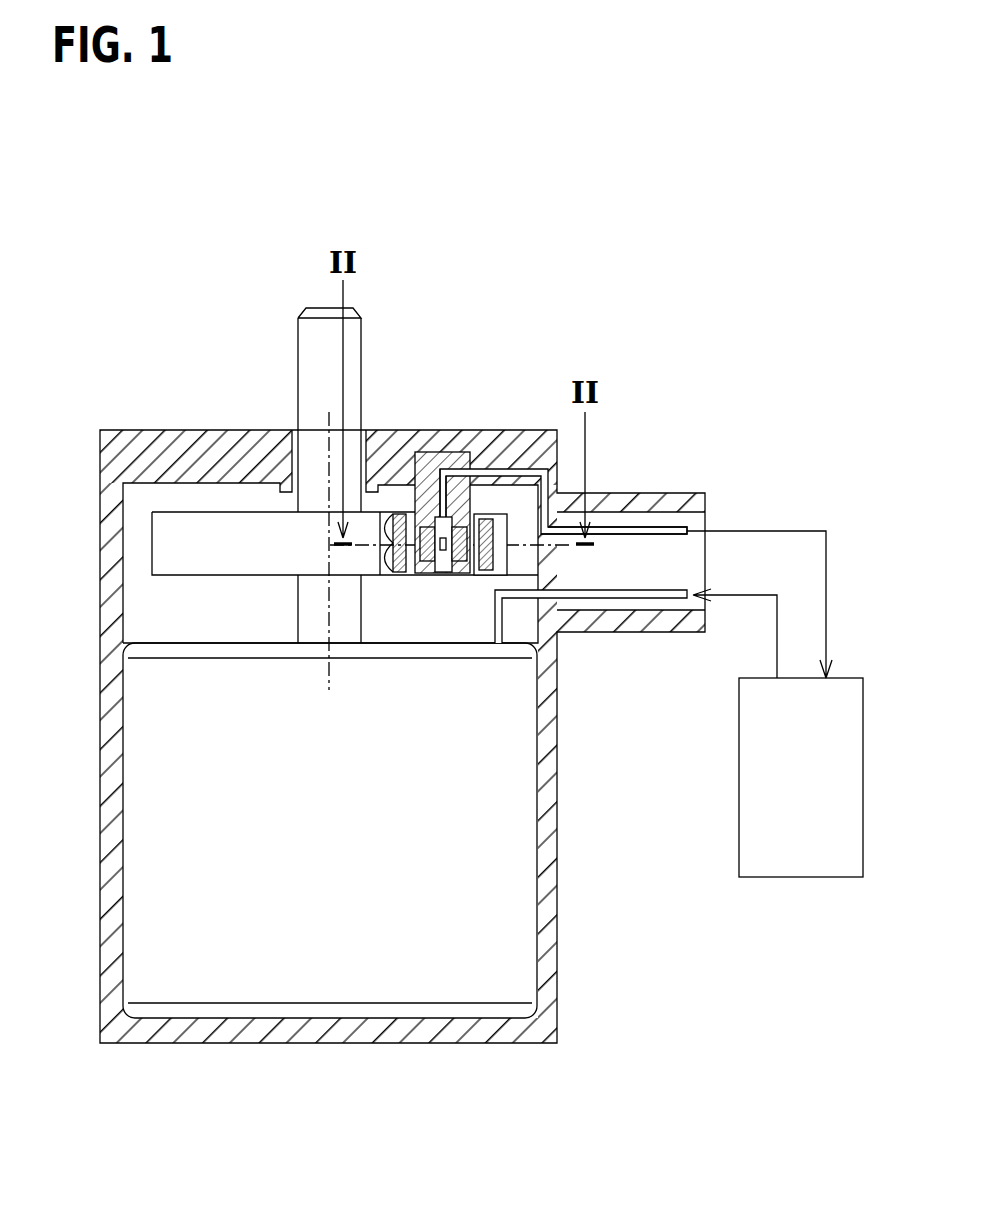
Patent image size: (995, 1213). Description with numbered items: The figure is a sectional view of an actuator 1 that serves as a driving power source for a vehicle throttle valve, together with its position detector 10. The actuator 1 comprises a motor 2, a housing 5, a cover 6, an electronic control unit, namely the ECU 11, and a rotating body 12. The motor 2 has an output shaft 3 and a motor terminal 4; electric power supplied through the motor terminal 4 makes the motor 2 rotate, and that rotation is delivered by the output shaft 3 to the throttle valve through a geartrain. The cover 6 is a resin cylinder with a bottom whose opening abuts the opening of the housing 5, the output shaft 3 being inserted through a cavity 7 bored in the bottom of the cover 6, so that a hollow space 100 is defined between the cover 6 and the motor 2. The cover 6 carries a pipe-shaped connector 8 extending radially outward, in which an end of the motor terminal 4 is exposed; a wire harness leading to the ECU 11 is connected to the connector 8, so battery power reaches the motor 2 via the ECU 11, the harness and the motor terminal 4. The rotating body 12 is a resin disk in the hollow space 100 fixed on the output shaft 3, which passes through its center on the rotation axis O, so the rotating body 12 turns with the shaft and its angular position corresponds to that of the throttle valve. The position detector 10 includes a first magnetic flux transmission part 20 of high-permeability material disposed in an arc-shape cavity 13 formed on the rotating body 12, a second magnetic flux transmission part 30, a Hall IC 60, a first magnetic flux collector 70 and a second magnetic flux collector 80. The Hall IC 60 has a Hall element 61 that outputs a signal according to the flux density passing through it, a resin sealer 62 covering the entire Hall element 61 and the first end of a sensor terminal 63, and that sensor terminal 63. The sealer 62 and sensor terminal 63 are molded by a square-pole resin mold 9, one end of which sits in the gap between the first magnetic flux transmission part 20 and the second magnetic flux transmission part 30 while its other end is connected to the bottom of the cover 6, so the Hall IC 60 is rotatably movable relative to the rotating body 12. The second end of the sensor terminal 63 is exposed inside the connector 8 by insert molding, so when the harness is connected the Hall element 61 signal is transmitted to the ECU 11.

The actuator 1 is at (165, 268).
The motor 2 is at (133, 755).
The output shaft 3 is at (307, 347).
The motor terminal 4 is at (625, 598).
The housing 5 is at (107, 877).
The cover 6 is at (364, 736).
The cavity 7 is at (300, 437).
The connector 8 is at (653, 500).
The mold 9 is at (554, 453).
The position detector 10 is at (524, 467).
The electronic control unit (ECU) 11 is at (748, 805).
The rotating body 12 is at (205, 572).
The arc-shape cavity 13 is at (411, 505).
The first magnetic flux transmission part 20 is at (390, 567).
The second magnetic flux transmission part 30 is at (487, 570).
The Hall IC 60 is at (435, 581).
The Hall element 61 is at (443, 551).
The sealer 62 is at (436, 452).
The sensor terminal 63 is at (614, 527).
The first magnetic flux collector 70 is at (423, 562).
The second magnetic flux collector 80 is at (459, 562).
The hollow space 100 is at (127, 600).
The rotation axis O is at (328, 606).